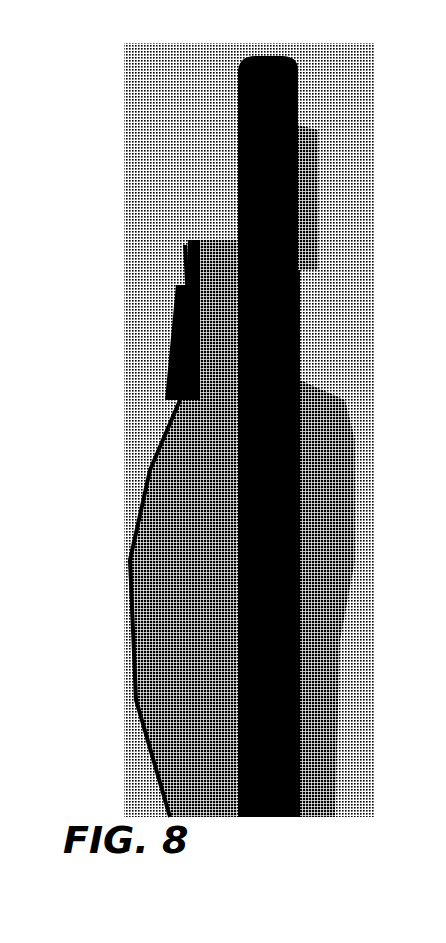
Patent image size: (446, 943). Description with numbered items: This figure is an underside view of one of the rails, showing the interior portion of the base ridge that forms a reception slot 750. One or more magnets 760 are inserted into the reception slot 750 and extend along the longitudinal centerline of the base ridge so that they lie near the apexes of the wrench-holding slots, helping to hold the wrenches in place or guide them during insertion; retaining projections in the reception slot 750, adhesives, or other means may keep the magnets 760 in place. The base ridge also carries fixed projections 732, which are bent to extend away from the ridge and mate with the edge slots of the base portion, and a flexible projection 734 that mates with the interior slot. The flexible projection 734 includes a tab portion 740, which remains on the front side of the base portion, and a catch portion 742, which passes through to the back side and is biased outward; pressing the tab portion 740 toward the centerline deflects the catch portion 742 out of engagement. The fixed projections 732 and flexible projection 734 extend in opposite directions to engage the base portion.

The fixed projections 732 is at (304, 170).
The flexible projection 734 is at (145, 475).
The tab portion 740 is at (178, 305).
The catch portion 742 is at (185, 277).
The reception slot 750 is at (230, 822).
The magnets 760 is at (262, 175).